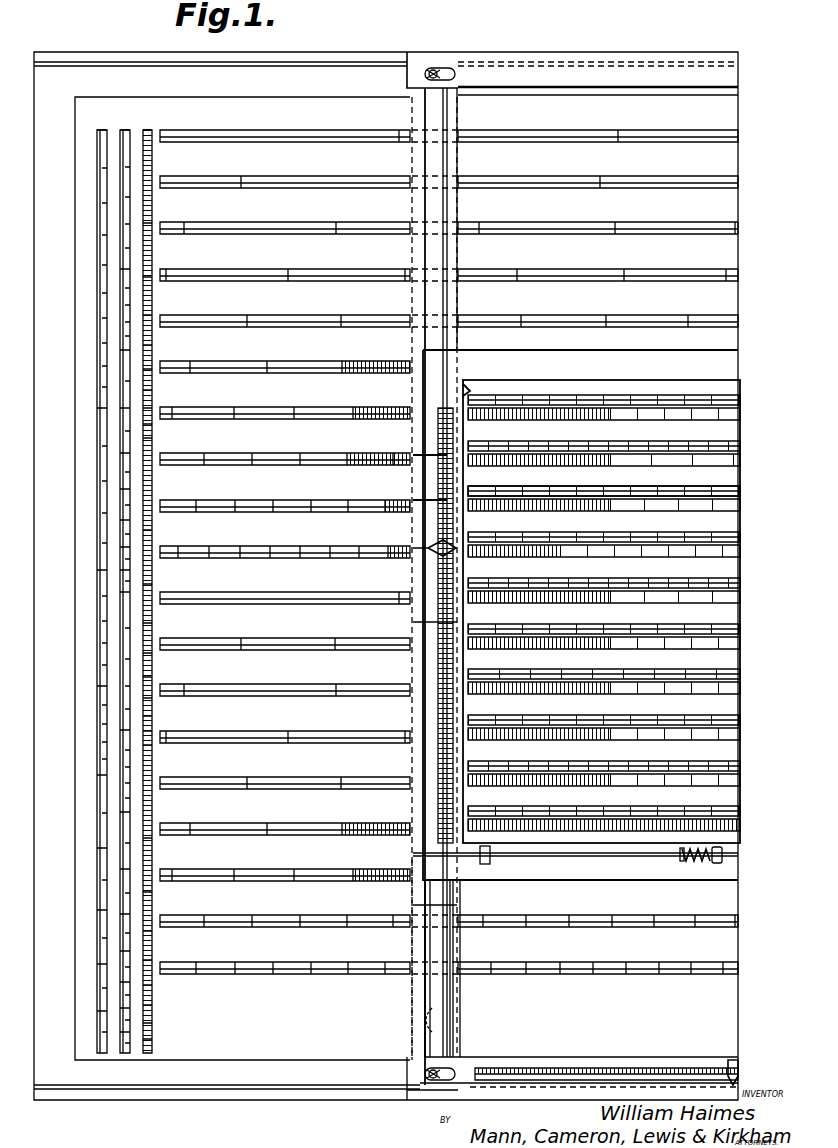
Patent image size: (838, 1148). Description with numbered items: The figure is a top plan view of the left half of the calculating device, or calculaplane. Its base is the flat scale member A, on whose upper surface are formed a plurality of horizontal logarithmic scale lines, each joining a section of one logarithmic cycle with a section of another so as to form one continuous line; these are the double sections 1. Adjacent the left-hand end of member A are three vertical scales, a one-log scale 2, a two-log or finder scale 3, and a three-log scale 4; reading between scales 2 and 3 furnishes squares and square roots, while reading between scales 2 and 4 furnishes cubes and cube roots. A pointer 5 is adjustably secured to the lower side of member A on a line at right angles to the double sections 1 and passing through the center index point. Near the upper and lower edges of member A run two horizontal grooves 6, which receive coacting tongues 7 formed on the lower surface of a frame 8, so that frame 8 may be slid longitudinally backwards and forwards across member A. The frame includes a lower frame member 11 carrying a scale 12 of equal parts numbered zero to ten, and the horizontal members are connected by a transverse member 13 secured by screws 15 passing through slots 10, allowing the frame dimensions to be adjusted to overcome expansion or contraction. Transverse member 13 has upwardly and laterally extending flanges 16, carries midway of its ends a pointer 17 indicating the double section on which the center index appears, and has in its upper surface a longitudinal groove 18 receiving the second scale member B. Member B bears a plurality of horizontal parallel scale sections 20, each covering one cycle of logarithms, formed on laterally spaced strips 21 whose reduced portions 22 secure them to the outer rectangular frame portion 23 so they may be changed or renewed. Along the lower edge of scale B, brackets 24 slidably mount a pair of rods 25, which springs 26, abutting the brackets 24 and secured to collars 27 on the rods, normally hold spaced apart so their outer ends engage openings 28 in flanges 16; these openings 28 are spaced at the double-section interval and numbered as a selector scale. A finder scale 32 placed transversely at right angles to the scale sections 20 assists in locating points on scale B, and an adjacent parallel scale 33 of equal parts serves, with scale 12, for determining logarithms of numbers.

The double sections 1 is at (318, 134).
The one-log scale 2 is at (100, 128).
The two-log or finder scale 3 is at (127, 128).
The three-log scale 4 is at (152, 130).
The pointer 5 is at (733, 1060).
The grooves 6 is at (345, 60).
The tongues 7 is at (622, 62).
The frame 8 is at (560, 52).
The slots 10 is at (455, 70).
The lower frame member 11 is at (640, 1068).
The scale of equal parts 12 is at (560, 1068).
The transverse member 13 is at (428, 990).
The screws 15 is at (428, 66).
The flanges 16 is at (420, 108).
The pointer 17 is at (428, 548).
The groove 18 is at (455, 1003).
The scale sections 20 is at (572, 394).
The strips 21 is at (648, 480).
The reduced portions 22 is at (470, 384).
The outer rectangular frame portion 23 is at (640, 356).
The brackets 24 is at (488, 866).
The rods 25 is at (598, 858).
The springs 26 is at (716, 864).
The collar 27 is at (682, 858).
The openings 28 is at (413, 622).
The finder scale 32 is at (425, 455).
The scale of equal parts 33 is at (425, 500).